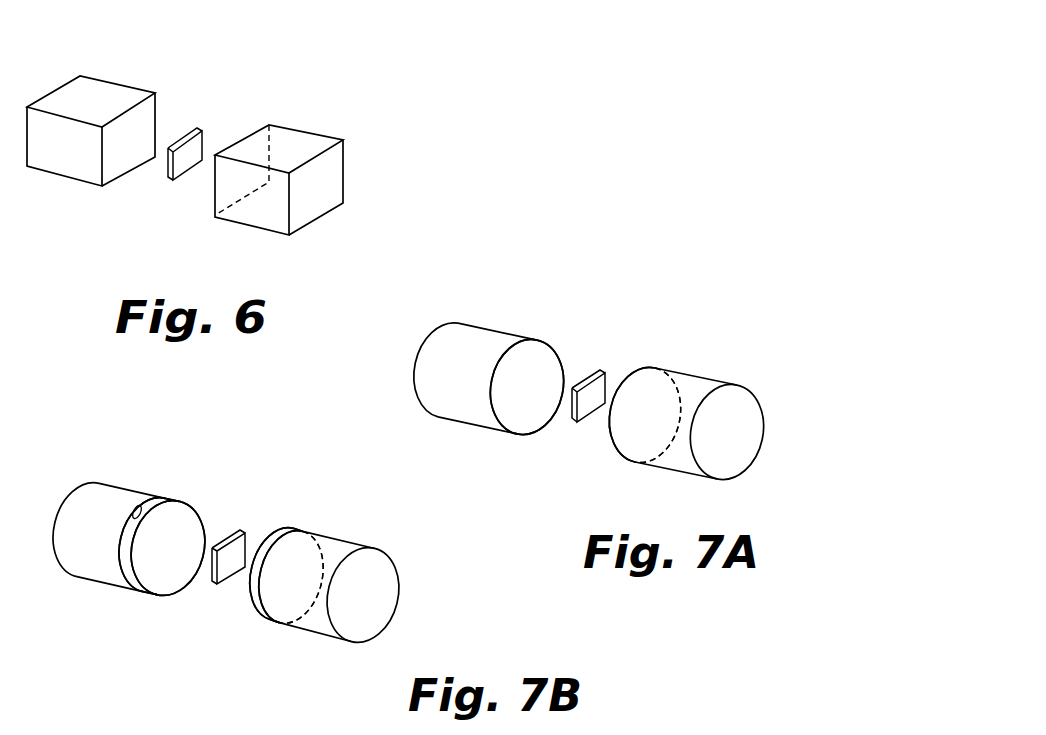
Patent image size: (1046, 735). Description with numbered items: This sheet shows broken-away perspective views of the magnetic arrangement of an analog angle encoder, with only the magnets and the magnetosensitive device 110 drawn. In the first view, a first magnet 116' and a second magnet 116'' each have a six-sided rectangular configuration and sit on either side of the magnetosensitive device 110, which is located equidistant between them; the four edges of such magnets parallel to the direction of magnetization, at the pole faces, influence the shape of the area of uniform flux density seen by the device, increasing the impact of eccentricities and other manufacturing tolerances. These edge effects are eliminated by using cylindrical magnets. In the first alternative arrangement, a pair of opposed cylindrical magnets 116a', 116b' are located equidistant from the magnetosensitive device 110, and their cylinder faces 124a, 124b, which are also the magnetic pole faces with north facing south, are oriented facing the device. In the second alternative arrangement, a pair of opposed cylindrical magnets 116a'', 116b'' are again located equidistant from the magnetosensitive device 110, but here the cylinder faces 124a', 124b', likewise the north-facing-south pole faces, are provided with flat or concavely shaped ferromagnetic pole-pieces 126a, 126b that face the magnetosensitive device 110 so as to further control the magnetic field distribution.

In FIG. 6, the magnetosensitive device 110 is at (192, 124).
In FIG. 7A, the magnetosensitive device 110 is at (595, 372).
In FIG. 7B, the magnetosensitive device 110 is at (238, 532).
In FIG. 6, the first magnet 116' is at (105, 98).
In FIG. 6, the second magnet 116'' is at (302, 157).
In FIG. 7A, the cylindrical magnet 116a' is at (493, 352).
In FIG. 7A, the cylindrical magnet 116b' is at (690, 405).
In FIG. 7B, the cylindrical magnet 116a'' is at (329, 609).
In FIG. 7B, the cylindrical magnet 116b'' is at (126, 566).
In FIG. 7A, the cylinder face 124a is at (527, 416).
In FIG. 7A, the cylinder face 124b is at (619, 433).
In FIG. 7B, the cylinder face 124a' is at (311, 552).
In FIG. 7B, the cylinder face 124b' is at (149, 511).
In FIG. 7B, the ferromagnetic pole-piece 126a is at (250, 600).
In FIG. 7B, the ferromagnetic pole-piece 126b is at (188, 530).